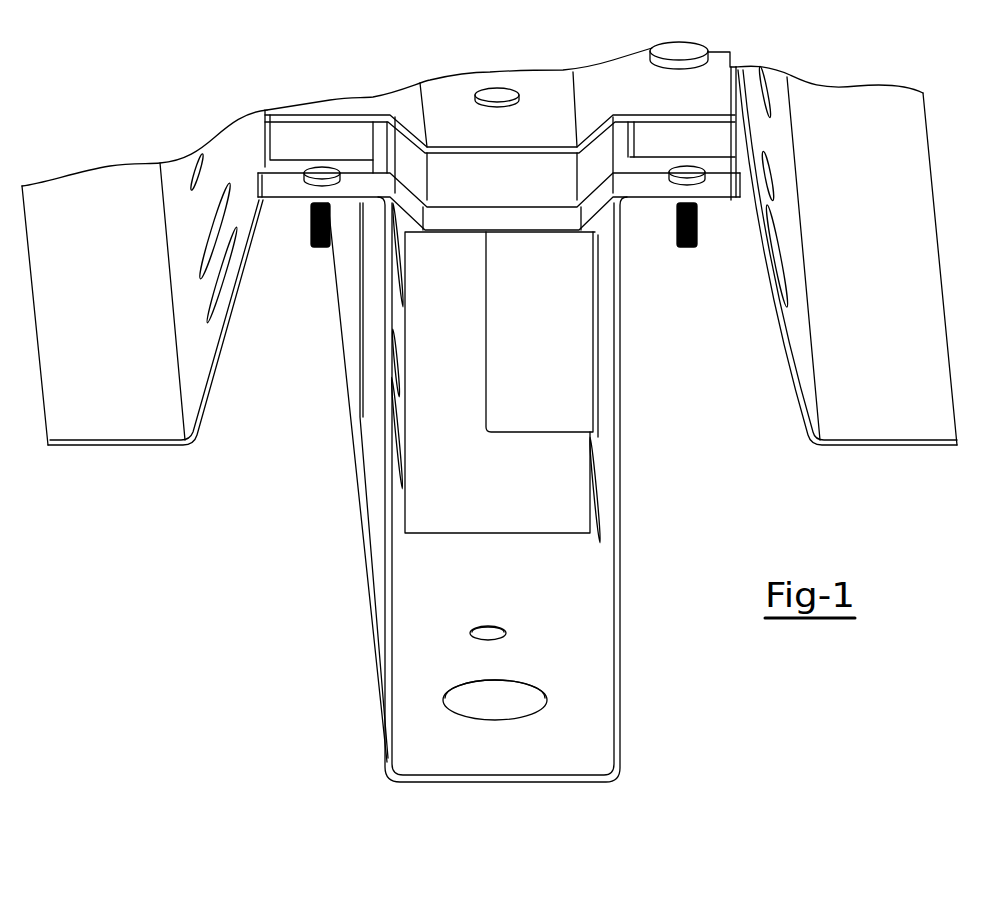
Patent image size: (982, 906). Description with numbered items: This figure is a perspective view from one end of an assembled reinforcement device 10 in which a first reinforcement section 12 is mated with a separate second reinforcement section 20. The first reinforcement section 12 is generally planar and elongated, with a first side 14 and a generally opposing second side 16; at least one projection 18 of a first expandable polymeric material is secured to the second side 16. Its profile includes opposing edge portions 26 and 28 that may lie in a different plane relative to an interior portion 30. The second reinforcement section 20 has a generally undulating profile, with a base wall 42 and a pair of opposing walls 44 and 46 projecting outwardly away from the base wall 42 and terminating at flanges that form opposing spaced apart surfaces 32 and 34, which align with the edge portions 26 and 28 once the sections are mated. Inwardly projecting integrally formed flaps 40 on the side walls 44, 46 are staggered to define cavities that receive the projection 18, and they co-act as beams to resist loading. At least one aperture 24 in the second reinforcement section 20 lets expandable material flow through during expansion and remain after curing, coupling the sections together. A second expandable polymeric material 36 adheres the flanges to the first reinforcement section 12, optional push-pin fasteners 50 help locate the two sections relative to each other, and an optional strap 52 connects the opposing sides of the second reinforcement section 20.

The reinforcement device 10 is at (215, 492).
The first reinforcement section 12 is at (617, 97).
The first side 14 is at (489, 142).
The second side 16 is at (718, 124).
The projection 18 is at (487, 515).
The second reinforcement section 20 is at (620, 494).
The aperture 24 is at (517, 700).
The edge portion 26 is at (708, 84).
The edge portion 28 is at (316, 100).
The interior portion 30 is at (455, 125).
The spaced apart surface 32 is at (643, 207).
The spaced apart surface 34 is at (283, 200).
The second expandable polymeric material 36 is at (343, 150).
The flap 40 is at (573, 357).
The base wall 42 is at (573, 763).
The opposing wall 44 is at (620, 413).
The opposing wall 46 is at (372, 551).
The push-pin fastener 50 is at (651, 57).
The strap 52 is at (487, 217).